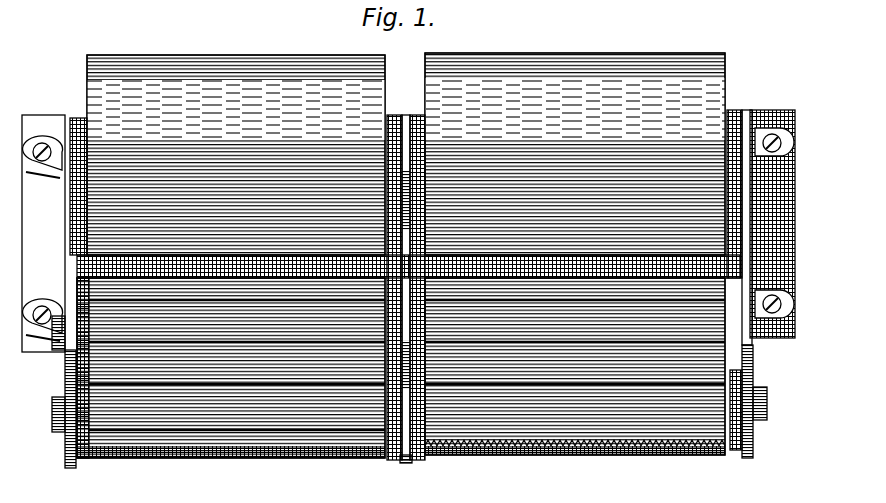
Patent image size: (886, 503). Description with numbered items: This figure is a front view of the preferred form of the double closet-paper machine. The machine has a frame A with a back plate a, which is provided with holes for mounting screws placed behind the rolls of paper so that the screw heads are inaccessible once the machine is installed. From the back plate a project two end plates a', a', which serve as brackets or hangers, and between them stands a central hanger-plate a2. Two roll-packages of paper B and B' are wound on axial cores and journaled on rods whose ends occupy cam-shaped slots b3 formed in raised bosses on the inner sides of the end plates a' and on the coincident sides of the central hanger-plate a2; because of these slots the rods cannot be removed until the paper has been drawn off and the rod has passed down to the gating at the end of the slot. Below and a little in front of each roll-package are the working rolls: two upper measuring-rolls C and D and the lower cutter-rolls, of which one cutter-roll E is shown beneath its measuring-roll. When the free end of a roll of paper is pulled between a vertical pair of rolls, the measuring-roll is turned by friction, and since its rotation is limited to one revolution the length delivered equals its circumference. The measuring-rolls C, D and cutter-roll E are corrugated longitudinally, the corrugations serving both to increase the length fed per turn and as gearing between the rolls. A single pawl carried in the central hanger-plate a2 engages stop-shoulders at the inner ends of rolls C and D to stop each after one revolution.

The frame A is at (43, 224).
The back plate a is at (412, 223).
The end plate a' is at (410, 289).
The central hanger-plate a2 is at (407, 463).
The cam-shaped slot b3 is at (80, 118).
The roll-package of paper B is at (236, 155).
The roll-package of paper B' is at (575, 154).
The measuring-roll C is at (231, 368).
The measuring-roll D is at (575, 366).
The cutter-roll E is at (238, 458).